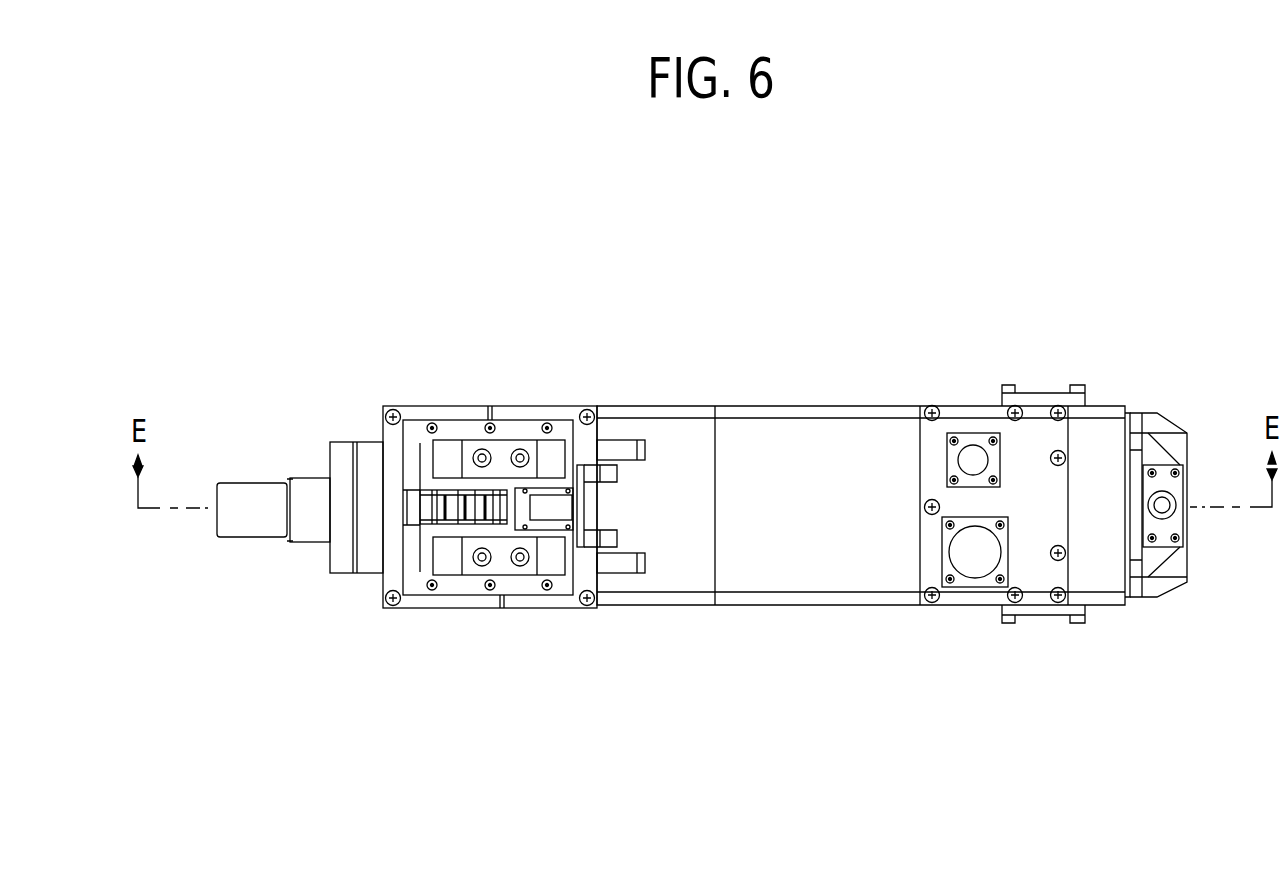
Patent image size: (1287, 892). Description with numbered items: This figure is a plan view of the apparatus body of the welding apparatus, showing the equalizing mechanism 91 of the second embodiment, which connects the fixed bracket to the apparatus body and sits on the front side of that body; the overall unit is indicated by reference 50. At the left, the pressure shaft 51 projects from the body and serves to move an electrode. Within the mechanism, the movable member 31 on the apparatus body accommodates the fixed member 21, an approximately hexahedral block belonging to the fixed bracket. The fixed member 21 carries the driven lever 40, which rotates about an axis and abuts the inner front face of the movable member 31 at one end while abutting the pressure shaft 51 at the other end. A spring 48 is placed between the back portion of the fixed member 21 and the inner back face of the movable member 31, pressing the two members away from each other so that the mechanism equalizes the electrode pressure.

The robot arm unit 50 is at (728, 467).
The pressure shaft 51 is at (308, 525).
The equalizing mechanism 91 is at (595, 270).
The movable member 31 is at (448, 430).
The fixed member 21 is at (502, 447).
The driven lever 40 is at (457, 522).
The spring 48 is at (551, 528).